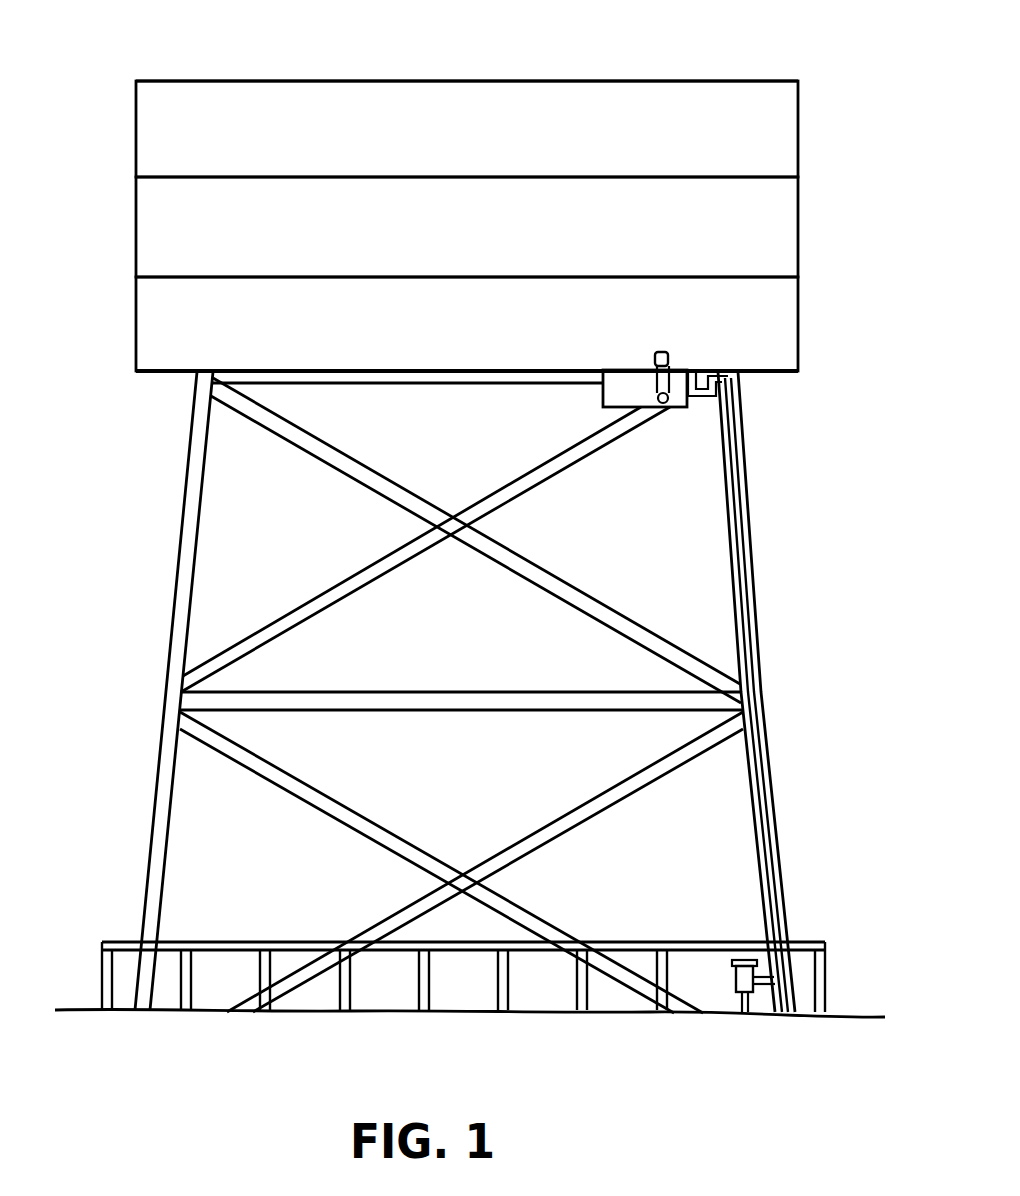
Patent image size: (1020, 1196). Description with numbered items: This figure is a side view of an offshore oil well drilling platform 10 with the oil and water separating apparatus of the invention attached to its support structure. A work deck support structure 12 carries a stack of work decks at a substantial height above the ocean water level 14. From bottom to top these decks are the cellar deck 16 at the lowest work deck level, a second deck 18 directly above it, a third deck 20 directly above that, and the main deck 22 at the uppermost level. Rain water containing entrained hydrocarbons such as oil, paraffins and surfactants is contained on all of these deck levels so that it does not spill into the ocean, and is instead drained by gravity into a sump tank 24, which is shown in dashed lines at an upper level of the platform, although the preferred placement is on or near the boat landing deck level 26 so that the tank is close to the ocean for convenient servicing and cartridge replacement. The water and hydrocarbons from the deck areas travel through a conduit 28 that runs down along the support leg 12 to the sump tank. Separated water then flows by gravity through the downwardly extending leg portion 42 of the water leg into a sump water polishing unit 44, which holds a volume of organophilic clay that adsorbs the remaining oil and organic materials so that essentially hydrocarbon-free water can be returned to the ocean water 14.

The offshore drilling platform 10 is at (834, 300).
The work deck support structure 12 is at (757, 615).
The ocean water level 14 is at (83, 1009).
The cellar deck 16 is at (177, 367).
The second deck 18 is at (185, 275).
The third deck 20 is at (187, 176).
The main deck 22 is at (173, 80).
The sump tank 24 is at (703, 406).
The boat landing deck level 26 is at (618, 940).
The conduit 28 is at (733, 508).
The leg portion of water leg 42 is at (753, 672).
The sump water polishing unit 44 is at (775, 983).